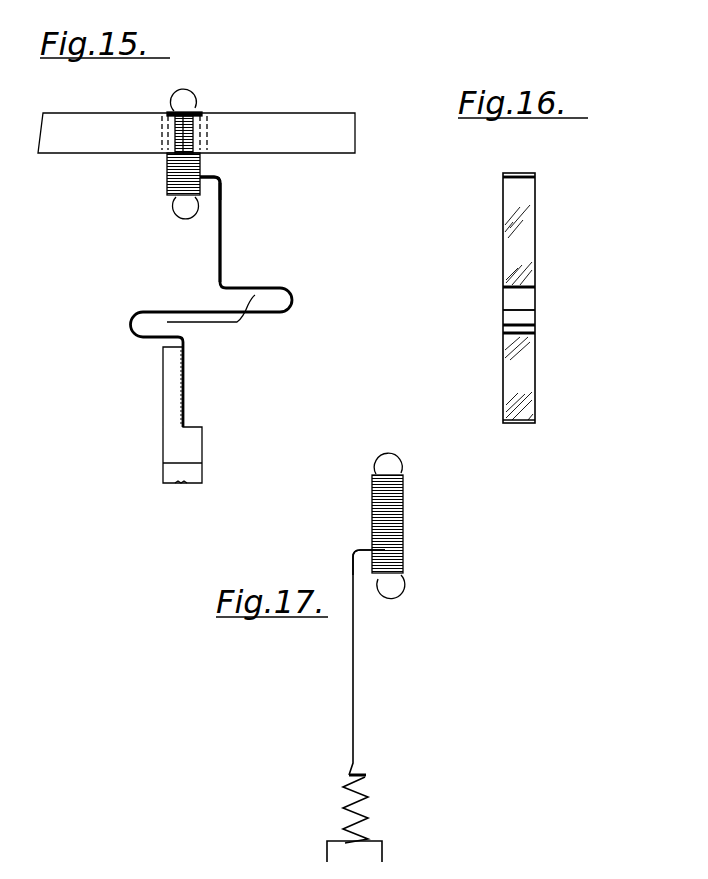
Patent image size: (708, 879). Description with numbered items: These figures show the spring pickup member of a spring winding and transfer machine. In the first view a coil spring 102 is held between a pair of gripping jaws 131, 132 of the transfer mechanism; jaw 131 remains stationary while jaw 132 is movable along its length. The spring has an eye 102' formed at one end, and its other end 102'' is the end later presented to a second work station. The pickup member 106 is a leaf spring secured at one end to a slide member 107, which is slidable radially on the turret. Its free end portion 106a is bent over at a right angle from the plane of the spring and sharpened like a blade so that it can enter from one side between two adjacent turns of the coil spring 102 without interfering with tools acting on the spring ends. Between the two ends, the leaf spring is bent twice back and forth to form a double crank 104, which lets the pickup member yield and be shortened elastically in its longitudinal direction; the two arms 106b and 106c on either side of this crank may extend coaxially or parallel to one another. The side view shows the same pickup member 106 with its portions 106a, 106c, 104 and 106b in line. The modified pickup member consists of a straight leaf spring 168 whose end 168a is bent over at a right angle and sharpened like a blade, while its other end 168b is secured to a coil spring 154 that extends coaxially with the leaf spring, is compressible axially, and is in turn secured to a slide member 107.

In FIG. 15, the coil spring 102 is at (159, 153).
In FIG. 17, the coil spring 102 is at (410, 522).
In FIG. 15, the eye 102' is at (154, 209).
In FIG. 17, the eye 102' is at (415, 597).
In FIG. 15, the other end of spring 102'' is at (209, 84).
In FIG. 17, the other end of spring 102'' is at (406, 445).
In FIG. 15, the double crank 104 is at (238, 322).
In FIG. 16, the double crank 104 is at (512, 317).
In FIG. 15, the pickup member 106 is at (223, 280).
In FIG. 16, the pickup member 106 is at (537, 274).
In FIG. 15, the free end portion 106a is at (214, 174).
In FIG. 16, the free end portion 106a is at (532, 177).
In FIG. 15, the arm 106b is at (187, 389).
In FIG. 16, the arm 106b is at (510, 358).
In FIG. 15, the arm 106c is at (222, 226).
In FIG. 16, the arm 106c is at (507, 232).
In FIG. 15, the slide member 107 is at (168, 417).
In FIG. 17, the slide member 107 is at (372, 848).
In FIG. 15, the jaw 131 is at (100, 130).
In FIG. 15, the jaw 132 is at (299, 120).
In FIG. 17, the coil spring 154 is at (366, 797).
In FIG. 17, the straight leaf spring 168 is at (355, 660).
In FIG. 17, the end of leaf spring 168a is at (363, 548).
In FIG. 17, the other end of leaf spring 168b is at (356, 770).